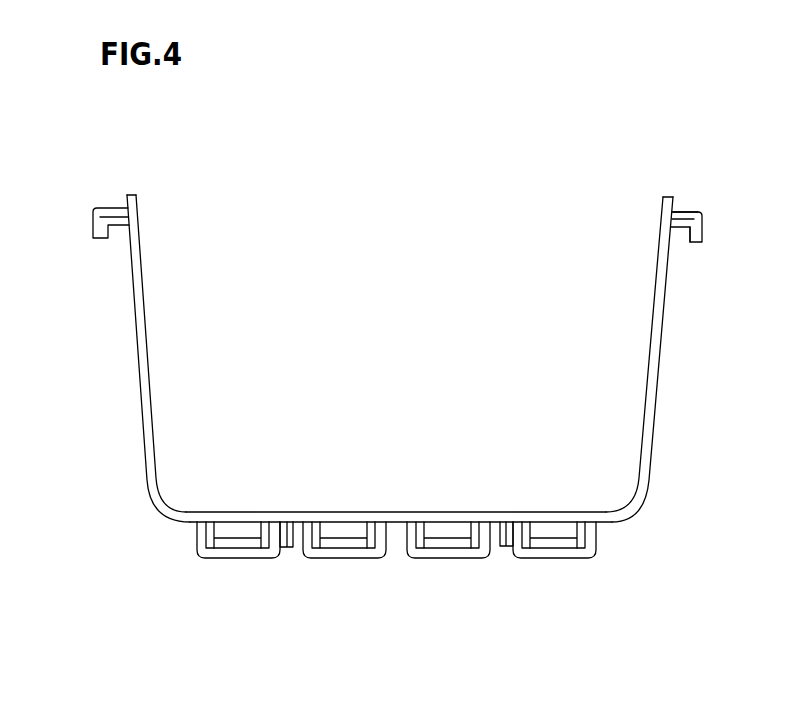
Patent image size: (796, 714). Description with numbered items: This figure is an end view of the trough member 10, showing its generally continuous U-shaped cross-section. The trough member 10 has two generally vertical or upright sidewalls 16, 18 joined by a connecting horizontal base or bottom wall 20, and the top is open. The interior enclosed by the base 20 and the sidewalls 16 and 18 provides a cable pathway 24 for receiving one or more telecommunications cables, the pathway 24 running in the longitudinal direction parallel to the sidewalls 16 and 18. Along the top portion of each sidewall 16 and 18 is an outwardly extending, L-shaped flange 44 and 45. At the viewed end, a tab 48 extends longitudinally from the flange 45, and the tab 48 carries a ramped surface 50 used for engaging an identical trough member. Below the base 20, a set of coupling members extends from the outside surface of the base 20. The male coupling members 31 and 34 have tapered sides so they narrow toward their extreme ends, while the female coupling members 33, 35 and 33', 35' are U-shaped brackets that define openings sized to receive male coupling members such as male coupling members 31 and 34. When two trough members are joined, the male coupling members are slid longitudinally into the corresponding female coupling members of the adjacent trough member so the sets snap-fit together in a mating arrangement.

The trough member 10 is at (419, 383).
The sidewall 16 is at (146, 316).
The sidewall 18 is at (650, 334).
The base 20 is at (393, 512).
The cable pathway 24 is at (421, 503).
The male coupling member 31 is at (223, 540).
The female coupling member 33 is at (344, 587).
The female coupling member 33' is at (453, 556).
The male coupling member 34 is at (437, 542).
The female coupling member 35 is at (550, 576).
The female coupling member 35' is at (243, 556).
The L-shaped flange 44 is at (97, 210).
The L-shaped flange 45 is at (704, 212).
The tab 48 is at (684, 229).
The ramped surface 50 is at (683, 214).